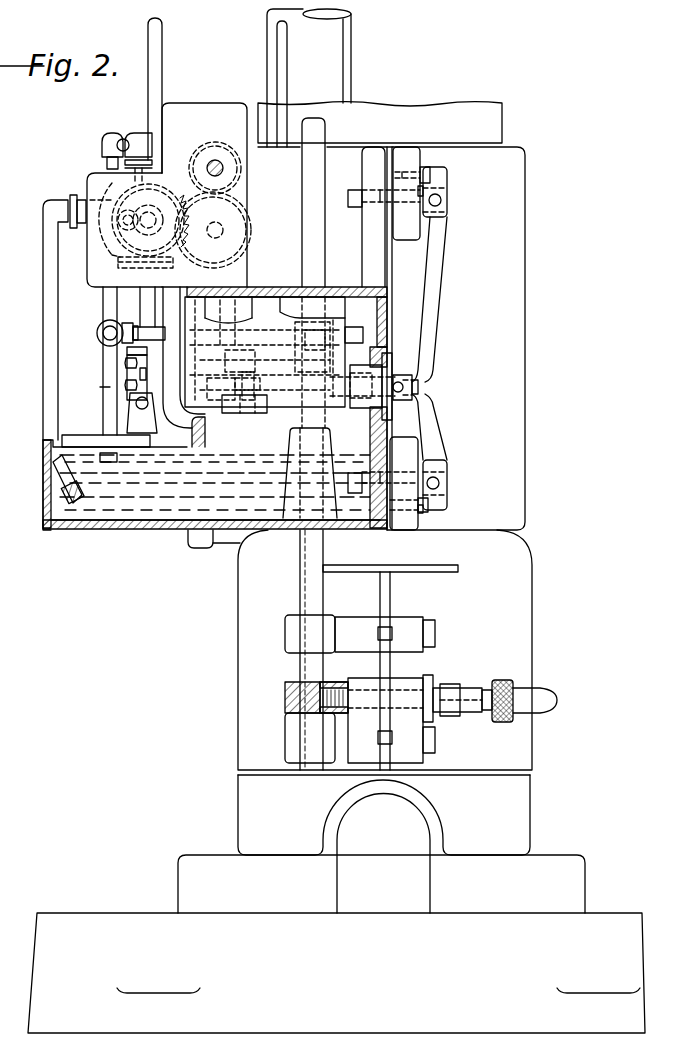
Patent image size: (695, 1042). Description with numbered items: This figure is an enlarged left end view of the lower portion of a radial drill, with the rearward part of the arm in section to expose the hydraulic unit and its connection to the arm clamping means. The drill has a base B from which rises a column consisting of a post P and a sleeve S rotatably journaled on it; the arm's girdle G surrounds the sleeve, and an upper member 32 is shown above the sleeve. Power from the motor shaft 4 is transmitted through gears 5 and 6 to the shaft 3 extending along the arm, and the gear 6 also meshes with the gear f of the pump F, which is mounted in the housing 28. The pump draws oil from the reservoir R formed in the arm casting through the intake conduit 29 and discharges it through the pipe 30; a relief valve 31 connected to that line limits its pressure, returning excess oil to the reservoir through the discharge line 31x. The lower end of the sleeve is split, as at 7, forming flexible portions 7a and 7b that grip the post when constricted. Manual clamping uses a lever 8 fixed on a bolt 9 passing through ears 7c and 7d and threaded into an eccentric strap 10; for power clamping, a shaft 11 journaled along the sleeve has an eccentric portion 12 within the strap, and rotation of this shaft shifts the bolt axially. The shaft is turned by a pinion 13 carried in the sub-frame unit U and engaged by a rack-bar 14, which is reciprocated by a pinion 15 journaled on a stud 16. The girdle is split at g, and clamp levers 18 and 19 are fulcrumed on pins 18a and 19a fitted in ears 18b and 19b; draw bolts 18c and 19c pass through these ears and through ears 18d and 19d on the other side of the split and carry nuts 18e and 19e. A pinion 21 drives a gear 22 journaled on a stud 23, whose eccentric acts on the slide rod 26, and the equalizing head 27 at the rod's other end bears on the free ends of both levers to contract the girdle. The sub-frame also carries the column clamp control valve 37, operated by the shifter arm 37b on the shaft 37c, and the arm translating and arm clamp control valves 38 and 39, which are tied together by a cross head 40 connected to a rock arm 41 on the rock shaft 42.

The base B is at (336, 973).
The post P is at (527, 807).
The girdle G is at (512, 355).
The sleeve S is at (503, 125).
The tube 32 is at (309, 78).
The shaft 11 is at (327, 124).
The housing 28 is at (195, 103).
The pipe 30 is at (125, 135).
The pump F is at (112, 183).
The gear f is at (127, 250).
The motor shaft 4 is at (210, 165).
The gear 5 is at (230, 147).
The gear 6 is at (252, 213).
The shaft 3 is at (215, 241).
The intake conduit 29 is at (47, 273).
The reservoir R is at (153, 507).
The relief valve 31 is at (97, 333).
The discharge line 31x is at (88, 388).
The column clamp control valve 37 is at (155, 323).
The shifter arm 37b is at (133, 323).
The shaft 37c is at (130, 349).
The valve 38 is at (157, 362).
The valve 39 is at (157, 380).
The cross head 40 is at (127, 372).
The rock arm 41 is at (127, 390).
The rock shaft 42 is at (142, 413).
The unit U is at (214, 408).
The pinion 15 is at (245, 340).
The stud 16 is at (240, 360).
The pinion 13 is at (292, 342).
The gear 22 is at (262, 388).
The pinion 21 is at (205, 392).
The stud 23 is at (265, 408).
The rack-bar 14 is at (353, 327).
The clamp actuating slide rod 26 is at (330, 400).
The split g is at (390, 147).
The clamp lever 18 is at (435, 277).
The pin 18a is at (427, 167).
The ear 18b is at (408, 150).
The draw bolt 18c is at (388, 198).
The ear 18d is at (362, 175).
The nut 18e is at (353, 206).
The equalizing head 27 is at (430, 385).
The clamp lever 19 is at (430, 430).
The pin 19a is at (427, 513).
The ear 19b is at (407, 517).
The draw bolt 19c is at (390, 478).
The ear 19d is at (365, 500).
The nut 19e is at (355, 493).
The split 7 is at (420, 572).
The flexible portion 7a is at (354, 644).
The flexible portion 7b is at (405, 663).
The ear 7c is at (354, 720).
The ear 7d is at (416, 738).
The eccentric portion 12 is at (297, 696).
The eccentric strap 10 is at (335, 718).
The bolt 9 is at (382, 708).
The lever 8 is at (535, 690).